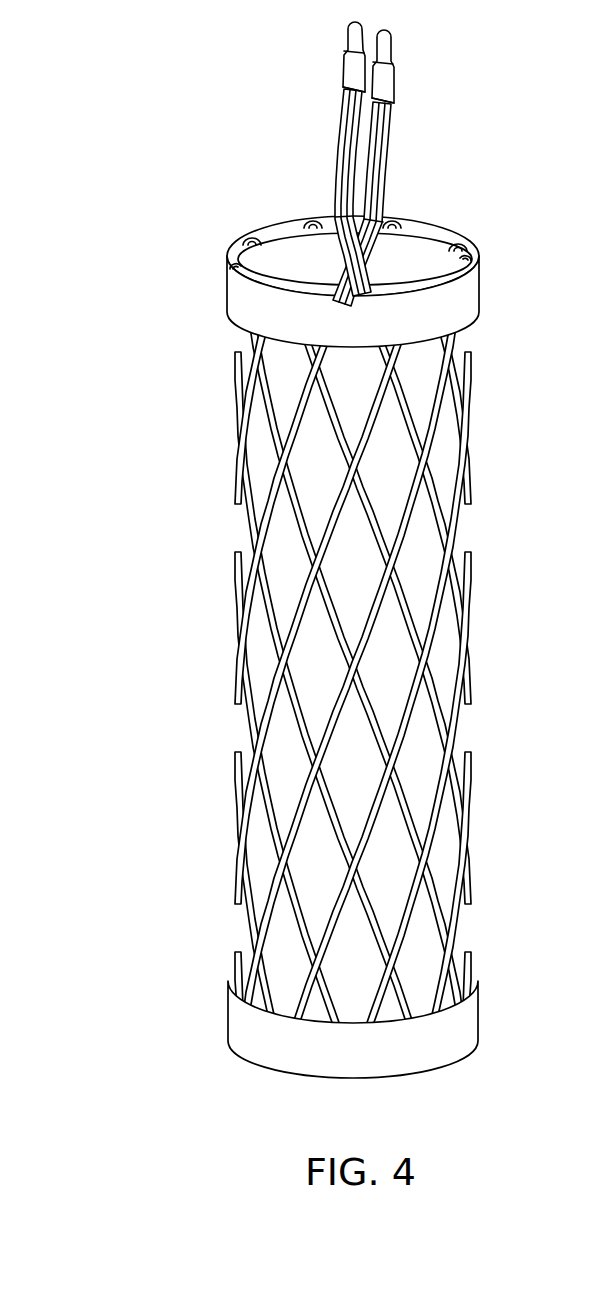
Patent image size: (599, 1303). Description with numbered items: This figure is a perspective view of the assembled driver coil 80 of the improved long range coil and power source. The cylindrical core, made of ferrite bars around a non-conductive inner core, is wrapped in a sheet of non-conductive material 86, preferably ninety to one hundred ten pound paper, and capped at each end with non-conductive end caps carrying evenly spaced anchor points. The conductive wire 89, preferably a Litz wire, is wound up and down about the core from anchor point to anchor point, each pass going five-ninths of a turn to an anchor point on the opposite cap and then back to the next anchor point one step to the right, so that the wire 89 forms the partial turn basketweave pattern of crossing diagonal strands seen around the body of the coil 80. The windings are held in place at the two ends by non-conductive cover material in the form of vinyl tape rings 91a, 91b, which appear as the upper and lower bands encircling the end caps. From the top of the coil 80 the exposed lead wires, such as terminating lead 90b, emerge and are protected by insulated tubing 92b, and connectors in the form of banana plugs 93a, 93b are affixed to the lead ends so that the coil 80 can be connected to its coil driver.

The coil 80 is at (120, 657).
The sheet of non-conductive material 86 is at (263, 457).
The conductive wire 89 is at (243, 502).
The terminating lead 90b is at (338, 127).
The vinyl tape ring 91a is at (230, 288).
The vinyl tape ring 91b is at (236, 1028).
The insulated tubing 92b is at (333, 160).
The banana plug 93a is at (348, 49).
The banana plug 93b is at (386, 70).